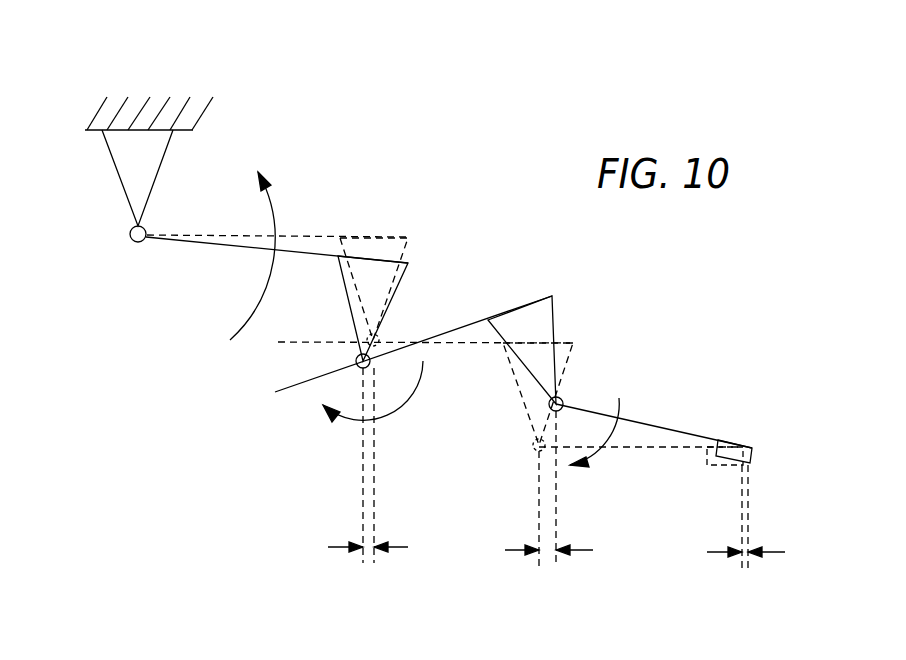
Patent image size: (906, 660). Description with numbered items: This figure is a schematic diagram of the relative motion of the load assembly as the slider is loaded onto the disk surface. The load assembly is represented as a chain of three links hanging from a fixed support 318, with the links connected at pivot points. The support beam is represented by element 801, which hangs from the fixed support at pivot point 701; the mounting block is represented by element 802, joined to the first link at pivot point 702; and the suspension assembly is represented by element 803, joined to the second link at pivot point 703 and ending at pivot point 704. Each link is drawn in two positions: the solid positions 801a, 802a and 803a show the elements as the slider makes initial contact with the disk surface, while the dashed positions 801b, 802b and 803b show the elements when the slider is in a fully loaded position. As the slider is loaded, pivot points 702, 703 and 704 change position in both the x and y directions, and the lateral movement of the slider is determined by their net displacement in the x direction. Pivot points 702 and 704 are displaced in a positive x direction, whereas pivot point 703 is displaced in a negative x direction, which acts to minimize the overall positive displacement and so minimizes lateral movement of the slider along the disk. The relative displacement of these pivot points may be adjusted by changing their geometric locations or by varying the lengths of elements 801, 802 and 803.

The fixed support (ground) 318 is at (151, 100).
The pivot point 701 is at (133, 242).
The support beam element 801 is at (303, 186).
The support beam element at initial contact 801a is at (296, 254).
The support beam element in fully loaded position 801b is at (375, 236).
The pivot point 702 is at (372, 352).
The mounting block element 802 is at (494, 276).
The mounting block element at initial contact 802a is at (295, 395).
The mounting block element in fully loaded position 802b is at (307, 342).
The pivot point 703 is at (549, 406).
The suspension assembly element 803 is at (642, 373).
The suspension assembly element at initial contact 803a is at (693, 428).
The suspension assembly element in fully loaded position 803b is at (650, 448).
The pivot point 704 is at (752, 462).